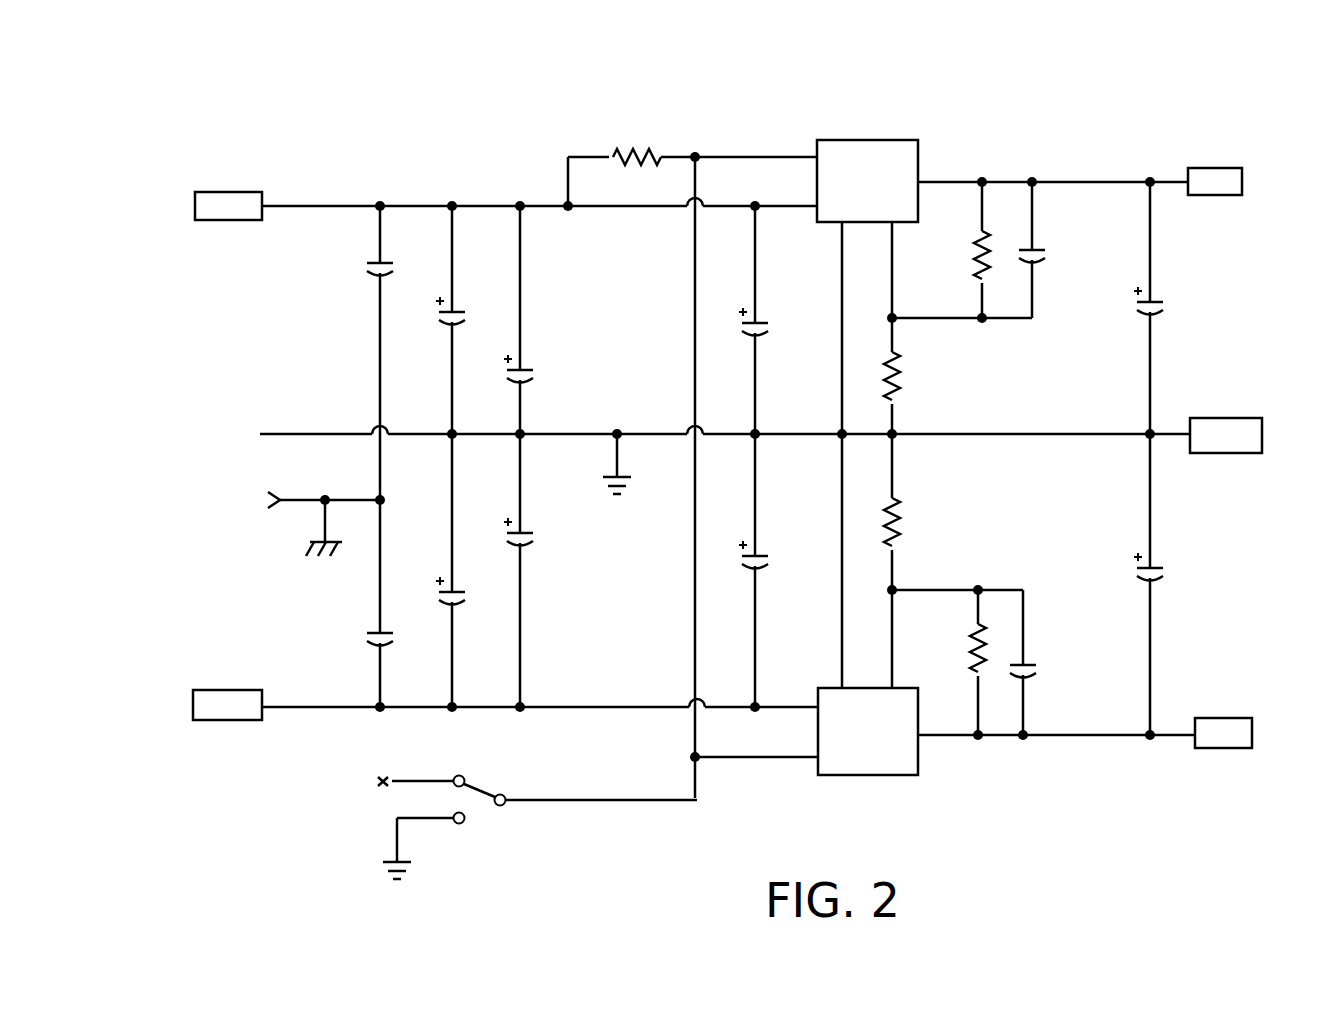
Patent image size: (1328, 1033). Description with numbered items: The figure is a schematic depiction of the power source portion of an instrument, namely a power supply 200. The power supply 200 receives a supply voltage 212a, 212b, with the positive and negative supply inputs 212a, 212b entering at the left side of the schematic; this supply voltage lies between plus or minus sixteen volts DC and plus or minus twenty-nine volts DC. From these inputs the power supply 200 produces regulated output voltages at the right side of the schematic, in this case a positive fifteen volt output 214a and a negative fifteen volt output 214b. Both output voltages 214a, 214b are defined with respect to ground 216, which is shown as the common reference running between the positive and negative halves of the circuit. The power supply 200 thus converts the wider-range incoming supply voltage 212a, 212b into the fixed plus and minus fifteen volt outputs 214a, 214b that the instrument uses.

The power supply 200 is at (747, 470).
The supply voltage 212a is at (297, 207).
The supply voltage 212b is at (295, 706).
The +15V output voltage 214a is at (1175, 183).
The −15V output voltage 214b is at (1173, 735).
The ground 216 is at (1173, 434).